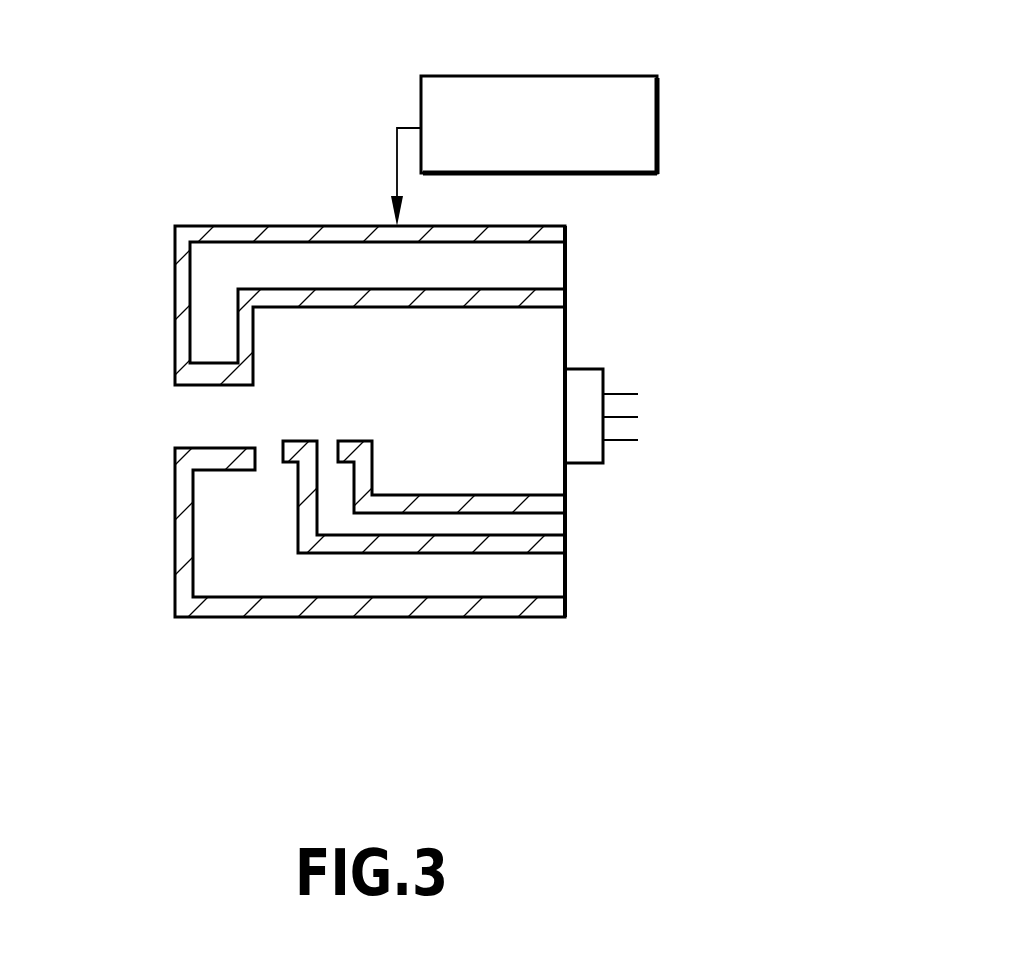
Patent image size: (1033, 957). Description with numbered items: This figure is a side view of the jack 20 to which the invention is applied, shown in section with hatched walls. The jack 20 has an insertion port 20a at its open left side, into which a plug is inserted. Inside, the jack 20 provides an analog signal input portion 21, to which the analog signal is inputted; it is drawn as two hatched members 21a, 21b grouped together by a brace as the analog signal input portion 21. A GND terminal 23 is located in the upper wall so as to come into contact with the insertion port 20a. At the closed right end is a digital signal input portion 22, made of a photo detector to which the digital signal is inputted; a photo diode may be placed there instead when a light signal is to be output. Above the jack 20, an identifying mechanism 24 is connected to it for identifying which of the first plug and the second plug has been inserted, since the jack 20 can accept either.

The jack 20 is at (320, 165).
The insertion port 20a is at (165, 422).
The analog signal input portion 21 is at (728, 460).
The first contact 21a is at (553, 503).
The second contact 21b is at (553, 545).
The digital signal input portion 22 is at (583, 384).
The GND terminal 23 is at (555, 294).
The identifying mechanism 24 is at (605, 76).